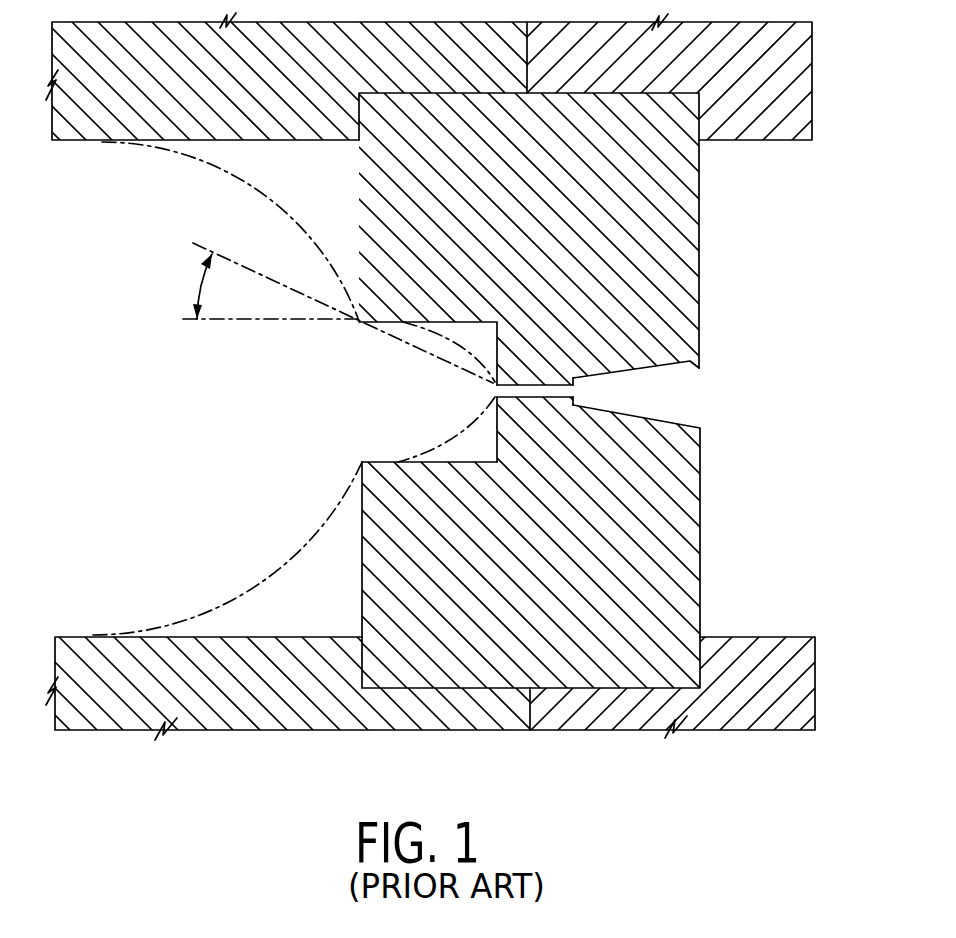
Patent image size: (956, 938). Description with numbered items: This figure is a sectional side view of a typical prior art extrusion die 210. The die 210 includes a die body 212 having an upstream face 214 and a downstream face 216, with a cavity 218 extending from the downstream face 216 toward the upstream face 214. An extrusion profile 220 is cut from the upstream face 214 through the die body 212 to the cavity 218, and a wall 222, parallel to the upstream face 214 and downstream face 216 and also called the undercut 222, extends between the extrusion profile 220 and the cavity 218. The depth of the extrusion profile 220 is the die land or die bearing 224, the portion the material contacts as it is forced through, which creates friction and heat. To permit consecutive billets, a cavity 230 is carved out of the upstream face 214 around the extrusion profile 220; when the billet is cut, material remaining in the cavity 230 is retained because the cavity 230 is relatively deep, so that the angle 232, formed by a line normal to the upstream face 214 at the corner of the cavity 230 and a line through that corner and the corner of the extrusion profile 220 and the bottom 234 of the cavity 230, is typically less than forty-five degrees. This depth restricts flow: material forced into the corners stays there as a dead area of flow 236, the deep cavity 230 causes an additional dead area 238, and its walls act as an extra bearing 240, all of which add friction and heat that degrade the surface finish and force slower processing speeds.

The extrusion die 210 is at (742, 207).
The die body 212 is at (668, 560).
The upstream face 214 is at (361, 546).
The downstream face 216 is at (699, 290).
The cavity 218 is at (703, 364).
The extrusion profile 220 is at (535, 404).
The wall (undercut) 222 is at (573, 403).
The die land (die bearing) 224 is at (553, 397).
The cavity 230 is at (374, 459).
The angle 232 is at (197, 285).
The bottom of the cavity 234 is at (497, 446).
The dead area of flow 236 is at (318, 618).
The additional dead area 238 is at (477, 433).
The extra bearing 240 is at (400, 458).